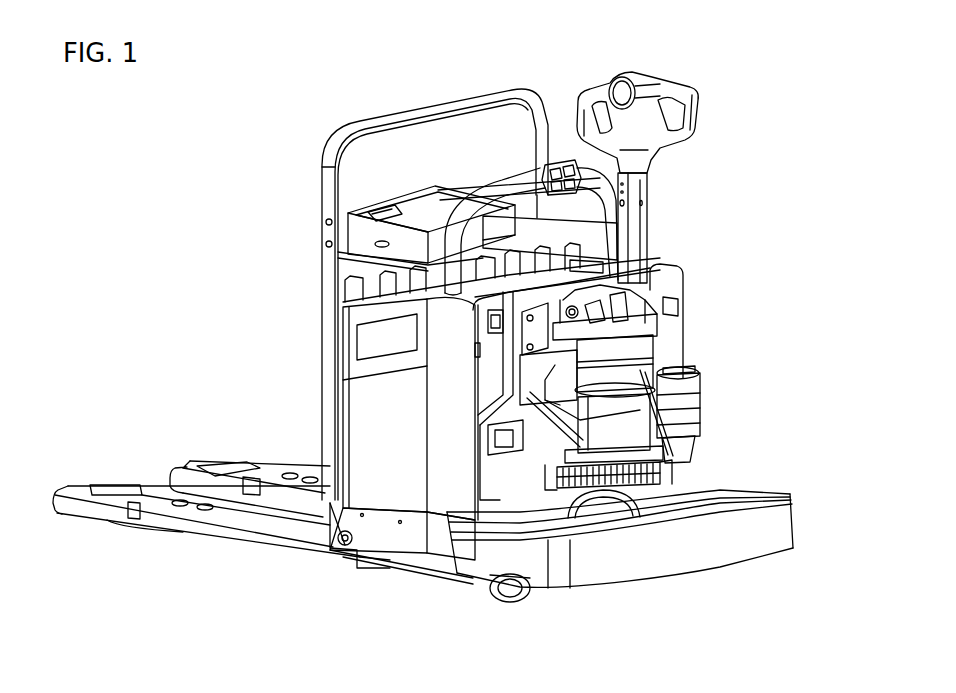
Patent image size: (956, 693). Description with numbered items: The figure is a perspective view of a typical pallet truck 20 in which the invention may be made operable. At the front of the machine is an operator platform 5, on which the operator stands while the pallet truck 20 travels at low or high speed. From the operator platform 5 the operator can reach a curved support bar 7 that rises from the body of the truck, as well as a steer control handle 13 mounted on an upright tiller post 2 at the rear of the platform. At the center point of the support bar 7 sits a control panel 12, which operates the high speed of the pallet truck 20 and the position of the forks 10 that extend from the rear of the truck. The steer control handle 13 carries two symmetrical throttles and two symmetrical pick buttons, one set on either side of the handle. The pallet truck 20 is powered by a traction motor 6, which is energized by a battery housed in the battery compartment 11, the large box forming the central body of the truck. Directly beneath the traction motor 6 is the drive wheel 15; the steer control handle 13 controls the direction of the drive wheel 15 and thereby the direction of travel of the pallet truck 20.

The tiller post 2 is at (653, 210).
The operator platform 5 is at (743, 478).
The traction motor 6 is at (632, 378).
The support bar 7 is at (487, 193).
The forks 10 is at (185, 462).
The battery compartment 11 is at (377, 428).
The control panel 12 is at (557, 160).
The steer control handle 13 is at (673, 78).
The drive wheel 15 is at (614, 495).
The pallet truck 20 is at (315, 562).